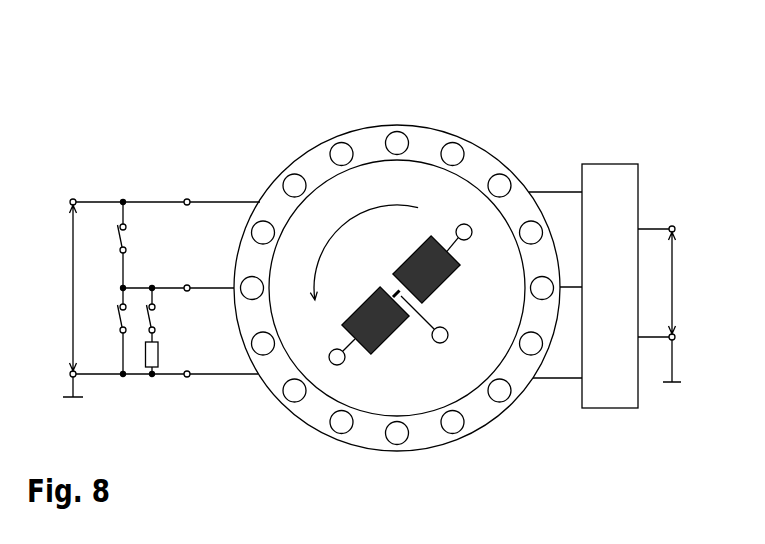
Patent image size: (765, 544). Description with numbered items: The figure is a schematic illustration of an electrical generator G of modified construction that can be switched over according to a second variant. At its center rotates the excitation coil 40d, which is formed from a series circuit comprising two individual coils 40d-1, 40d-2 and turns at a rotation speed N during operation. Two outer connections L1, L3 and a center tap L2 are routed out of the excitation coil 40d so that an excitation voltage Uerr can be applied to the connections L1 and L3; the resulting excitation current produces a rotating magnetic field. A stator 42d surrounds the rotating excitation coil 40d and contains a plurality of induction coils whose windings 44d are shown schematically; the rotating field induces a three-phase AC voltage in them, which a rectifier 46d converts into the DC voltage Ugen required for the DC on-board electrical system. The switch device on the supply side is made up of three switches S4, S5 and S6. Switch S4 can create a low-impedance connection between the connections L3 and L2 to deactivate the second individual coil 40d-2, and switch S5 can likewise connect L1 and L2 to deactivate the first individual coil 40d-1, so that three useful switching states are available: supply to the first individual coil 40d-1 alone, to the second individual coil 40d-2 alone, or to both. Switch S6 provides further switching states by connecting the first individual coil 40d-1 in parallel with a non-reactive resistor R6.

The electrical generator G is at (210, 108).
The stator 42d is at (488, 133).
The windings of the induction coils 44d is at (398, 142).
The excitation coil 40d is at (418, 266).
The first individual coil 40d-1 is at (360, 290).
The second individual coil 40d-2 is at (428, 227).
The rotation speed N is at (364, 252).
The outer connection L1 is at (214, 363).
The center tap L2 is at (294, 318).
The outer connection L3 is at (281, 224).
The switch S4 is at (107, 245).
The switch S5 is at (107, 331).
The switch S6 is at (165, 315).
The non-reactive resistor R6 is at (166, 358).
The excitation voltage Uerr is at (52, 298).
The rectifier 46d is at (627, 296).
The DC voltage Ugen is at (681, 304).